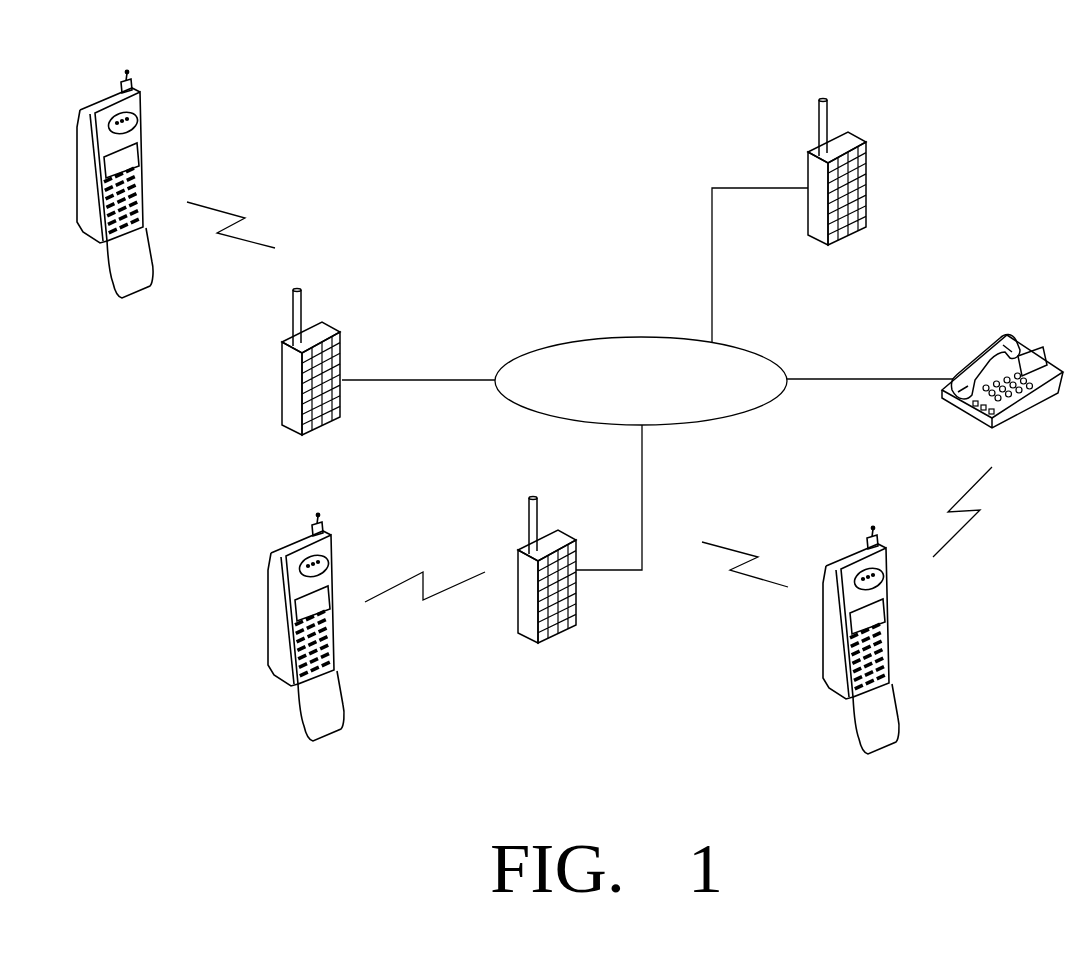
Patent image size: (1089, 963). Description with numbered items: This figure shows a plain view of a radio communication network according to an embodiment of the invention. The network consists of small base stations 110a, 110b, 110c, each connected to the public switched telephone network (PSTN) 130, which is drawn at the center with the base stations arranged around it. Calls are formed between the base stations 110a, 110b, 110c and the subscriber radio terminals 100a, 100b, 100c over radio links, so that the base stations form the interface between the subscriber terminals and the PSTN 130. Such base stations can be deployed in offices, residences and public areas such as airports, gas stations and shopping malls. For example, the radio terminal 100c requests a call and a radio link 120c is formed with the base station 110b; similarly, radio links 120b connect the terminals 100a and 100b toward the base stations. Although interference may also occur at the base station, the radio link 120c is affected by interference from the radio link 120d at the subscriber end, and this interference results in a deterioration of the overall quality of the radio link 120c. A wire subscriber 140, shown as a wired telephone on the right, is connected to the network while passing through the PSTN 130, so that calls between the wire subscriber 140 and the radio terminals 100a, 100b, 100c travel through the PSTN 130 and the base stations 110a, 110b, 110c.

The subscriber radio terminal 100a is at (102, 95).
The subscriber radio terminal 100b is at (268, 613).
The subscriber radio terminal 100c is at (858, 550).
The base station 110a is at (323, 330).
The base station 110b is at (560, 537).
The base station 110c is at (847, 140).
The radio link 120b is at (336, 389).
The radio link 120c is at (736, 577).
The radio link 120d is at (994, 512).
The public switched telephone network (PSTN) 130 is at (614, 337).
The wire subscriber 140 is at (1045, 352).